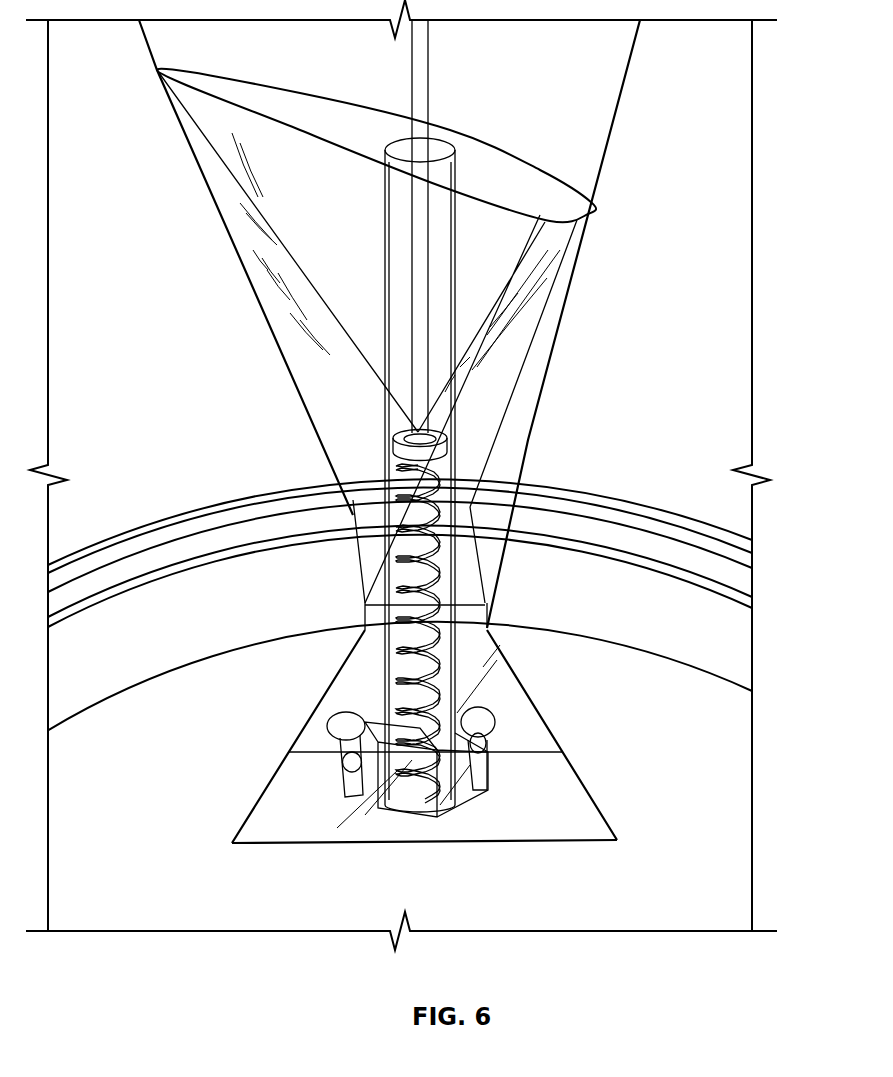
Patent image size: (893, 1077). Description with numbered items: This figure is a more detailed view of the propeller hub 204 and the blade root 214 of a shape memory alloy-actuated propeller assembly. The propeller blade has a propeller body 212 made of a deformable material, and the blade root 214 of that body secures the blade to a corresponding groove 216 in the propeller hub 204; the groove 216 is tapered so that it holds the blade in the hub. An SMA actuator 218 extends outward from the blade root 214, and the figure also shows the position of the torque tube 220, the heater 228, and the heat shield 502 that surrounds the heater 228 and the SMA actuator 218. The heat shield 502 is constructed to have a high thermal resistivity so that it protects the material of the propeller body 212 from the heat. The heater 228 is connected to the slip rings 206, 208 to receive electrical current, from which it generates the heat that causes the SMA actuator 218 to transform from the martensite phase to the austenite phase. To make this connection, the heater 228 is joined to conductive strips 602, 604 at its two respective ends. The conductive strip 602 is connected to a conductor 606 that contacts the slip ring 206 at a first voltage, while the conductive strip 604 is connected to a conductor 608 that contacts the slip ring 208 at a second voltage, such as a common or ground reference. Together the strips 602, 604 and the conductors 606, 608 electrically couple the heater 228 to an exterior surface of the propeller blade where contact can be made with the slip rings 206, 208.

The propeller hub 204 is at (740, 750).
The slip ring 206 is at (737, 587).
The slip ring 208 is at (737, 545).
The propeller body 212 is at (537, 380).
The blade root 214 is at (272, 788).
The groove 216 is at (568, 842).
The SMA actuator 218 is at (443, 502).
The torque tube 220 is at (411, 80).
The heater 228 is at (395, 455).
The heat shield 502 is at (393, 480).
The conductive strip 602 is at (357, 793).
The conductive strip 604 is at (488, 788).
The conductor 606 is at (347, 728).
The conductor 608 is at (477, 715).